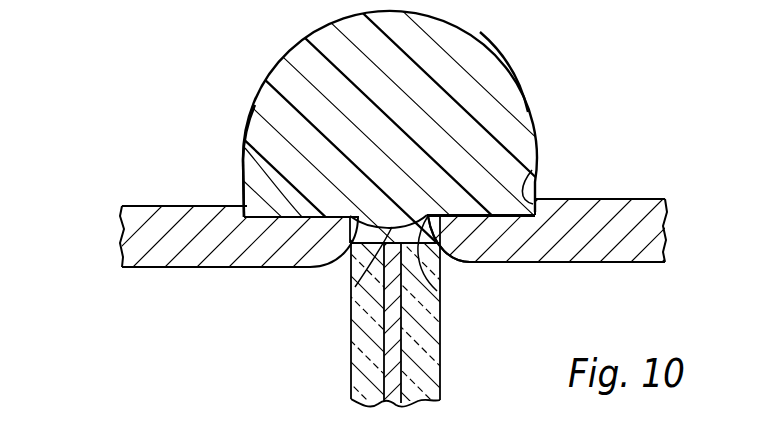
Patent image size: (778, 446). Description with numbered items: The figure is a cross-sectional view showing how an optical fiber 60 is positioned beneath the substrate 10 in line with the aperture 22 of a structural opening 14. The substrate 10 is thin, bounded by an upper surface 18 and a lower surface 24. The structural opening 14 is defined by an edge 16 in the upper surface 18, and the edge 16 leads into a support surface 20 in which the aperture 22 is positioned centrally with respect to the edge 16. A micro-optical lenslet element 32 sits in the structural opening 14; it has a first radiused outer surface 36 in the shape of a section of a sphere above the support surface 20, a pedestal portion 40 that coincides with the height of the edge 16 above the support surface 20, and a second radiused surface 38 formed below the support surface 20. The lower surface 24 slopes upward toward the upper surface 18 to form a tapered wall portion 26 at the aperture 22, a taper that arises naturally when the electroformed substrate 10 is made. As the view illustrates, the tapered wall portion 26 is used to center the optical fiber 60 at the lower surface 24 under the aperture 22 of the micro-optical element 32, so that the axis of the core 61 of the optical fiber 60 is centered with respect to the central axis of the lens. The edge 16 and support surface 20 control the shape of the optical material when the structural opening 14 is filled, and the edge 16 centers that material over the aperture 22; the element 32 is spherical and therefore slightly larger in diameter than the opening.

The substrate 10 is at (120, 238).
The structural opening 14 is at (553, 189).
The edge 16 is at (532, 170).
The upper surface 18 is at (140, 205).
The support surface 20 is at (243, 176).
The aperture 22 is at (437, 291).
The lower surface 24 is at (143, 269).
The tapered wall portion 26 is at (462, 263).
The micro-optical lenslet element 32 is at (517, 62).
The first radiused outer surface 36 is at (524, 106).
The second radiused surface 38 is at (355, 287).
The pedestal portion 40 is at (246, 128).
The optical fiber 60 is at (351, 374).
The core 61 is at (402, 344).